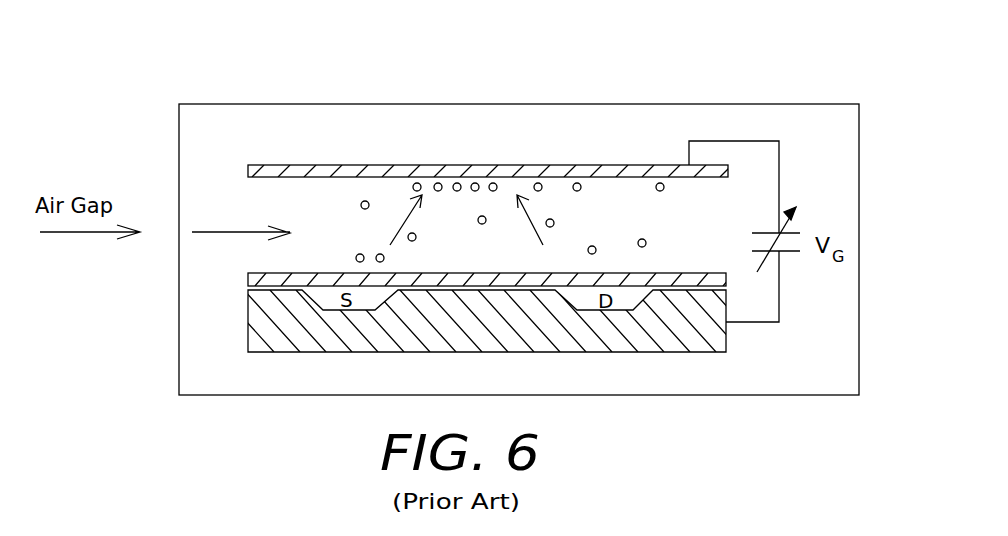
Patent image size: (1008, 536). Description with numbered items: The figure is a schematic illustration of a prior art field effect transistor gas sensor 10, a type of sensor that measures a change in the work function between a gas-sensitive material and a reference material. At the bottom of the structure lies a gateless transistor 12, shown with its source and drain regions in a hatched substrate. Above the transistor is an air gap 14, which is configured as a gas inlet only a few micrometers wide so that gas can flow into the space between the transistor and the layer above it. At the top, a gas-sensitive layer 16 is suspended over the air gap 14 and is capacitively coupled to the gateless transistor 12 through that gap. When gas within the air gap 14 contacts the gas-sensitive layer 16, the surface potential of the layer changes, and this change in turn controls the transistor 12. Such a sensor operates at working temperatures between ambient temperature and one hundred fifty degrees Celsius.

The FET gas sensor 10 is at (205, 88).
The gateless transistor 12 is at (238, 265).
The air gap 14 is at (625, 228).
The gas-sensitive layer 16 is at (568, 167).